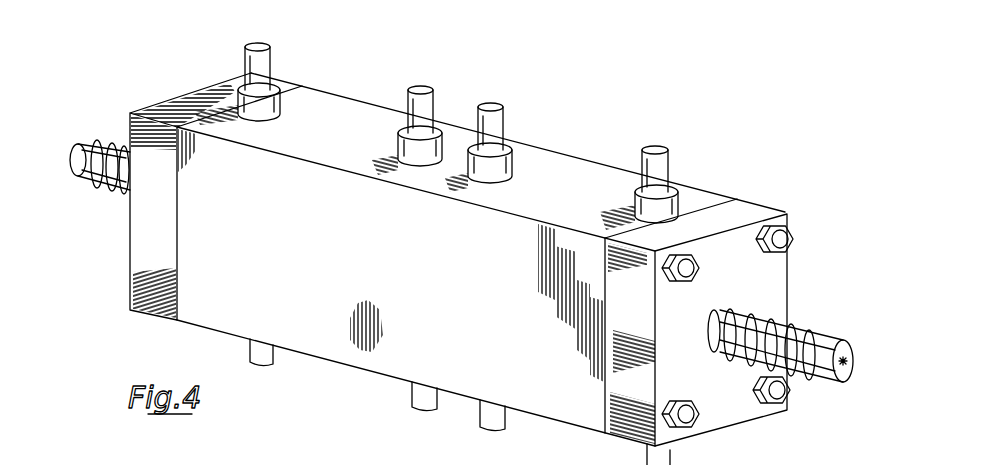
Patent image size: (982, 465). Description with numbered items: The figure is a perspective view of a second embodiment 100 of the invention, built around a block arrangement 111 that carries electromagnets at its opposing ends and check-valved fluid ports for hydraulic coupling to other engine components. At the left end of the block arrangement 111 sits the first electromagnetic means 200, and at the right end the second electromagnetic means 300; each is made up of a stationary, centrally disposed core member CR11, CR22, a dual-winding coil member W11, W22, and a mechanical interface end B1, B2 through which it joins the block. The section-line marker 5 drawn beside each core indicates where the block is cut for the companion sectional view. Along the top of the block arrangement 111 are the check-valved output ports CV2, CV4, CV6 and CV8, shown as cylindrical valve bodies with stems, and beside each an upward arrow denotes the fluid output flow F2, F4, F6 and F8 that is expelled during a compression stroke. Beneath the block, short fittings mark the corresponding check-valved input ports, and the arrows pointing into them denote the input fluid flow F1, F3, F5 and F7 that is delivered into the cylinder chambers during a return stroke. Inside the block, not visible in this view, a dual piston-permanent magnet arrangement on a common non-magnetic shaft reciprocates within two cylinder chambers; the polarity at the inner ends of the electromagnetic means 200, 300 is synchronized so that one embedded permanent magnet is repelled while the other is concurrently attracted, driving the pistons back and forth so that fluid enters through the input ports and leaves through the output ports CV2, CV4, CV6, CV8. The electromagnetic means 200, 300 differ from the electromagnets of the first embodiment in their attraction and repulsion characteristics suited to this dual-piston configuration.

The second embodiment 100 is at (576, 68).
The first electromagnetic means 200 is at (117, 76).
The second electromagnetic means 300 is at (788, 205).
The block arrangement 111 is at (481, 259).
The mechanical interface end B1 is at (130, 258).
The mechanical interface end B2 is at (790, 274).
The check-valved output port CV2 is at (242, 100).
The check-valved output port CV4 is at (400, 150).
The check-valved output port CV6 is at (513, 165).
The check-valved output port CV8 is at (680, 205).
The input fluid flow F1 is at (261, 364).
The fluid output flow F2 is at (257, 9).
The input fluid flow F3 is at (424, 410).
The fluid output flow F4 is at (420, 45).
The input fluid flow F5 is at (493, 430).
The fluid output flow F6 is at (490, 67).
The input fluid flow F7 is at (638, 454).
The fluid output flow F8 is at (654, 113).
The core member CR11 is at (98, 142).
The core member CR22 is at (848, 348).
The dual-winding coil member W11 is at (80, 172).
The dual-winding coil member W22 is at (826, 460).
The section line 5- 5 is at (62, 160).